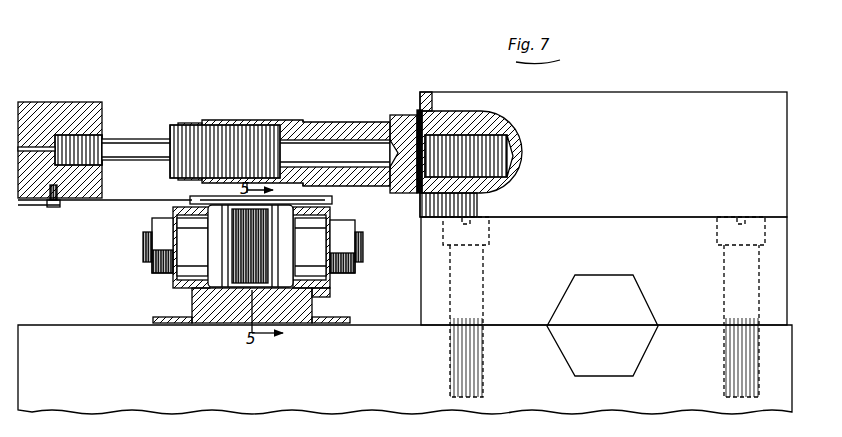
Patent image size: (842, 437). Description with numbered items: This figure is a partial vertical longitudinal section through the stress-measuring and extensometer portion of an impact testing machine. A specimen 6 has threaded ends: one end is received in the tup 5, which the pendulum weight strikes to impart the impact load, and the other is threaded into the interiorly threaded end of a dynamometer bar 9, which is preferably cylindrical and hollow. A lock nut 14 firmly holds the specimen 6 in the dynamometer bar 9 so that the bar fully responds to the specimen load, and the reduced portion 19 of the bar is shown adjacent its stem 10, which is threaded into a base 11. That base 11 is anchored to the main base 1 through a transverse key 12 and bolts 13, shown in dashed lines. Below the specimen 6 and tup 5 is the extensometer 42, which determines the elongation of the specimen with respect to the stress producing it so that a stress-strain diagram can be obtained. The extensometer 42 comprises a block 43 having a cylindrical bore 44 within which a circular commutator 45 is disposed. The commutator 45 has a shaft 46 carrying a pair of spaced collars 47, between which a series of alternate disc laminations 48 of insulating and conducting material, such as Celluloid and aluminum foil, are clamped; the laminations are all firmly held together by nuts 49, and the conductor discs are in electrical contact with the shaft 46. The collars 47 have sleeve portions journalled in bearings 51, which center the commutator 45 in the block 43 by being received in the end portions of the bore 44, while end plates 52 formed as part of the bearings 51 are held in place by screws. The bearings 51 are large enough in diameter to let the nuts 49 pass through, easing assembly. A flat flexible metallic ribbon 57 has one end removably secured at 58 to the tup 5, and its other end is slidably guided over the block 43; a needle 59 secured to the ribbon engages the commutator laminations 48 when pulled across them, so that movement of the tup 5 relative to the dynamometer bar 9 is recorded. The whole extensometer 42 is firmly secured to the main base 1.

The base 1 is at (370, 337).
The tup 5 is at (53, 113).
The specimen 6 is at (143, 140).
The dynamometer bar 9 is at (250, 123).
The stem 10 is at (457, 137).
The base 11 is at (603, 108).
The transverse key 12 is at (605, 287).
The bolts 13 is at (472, 302).
The lock nut 14 is at (183, 122).
The reduced portion of sleeve 19 is at (365, 118).
The extensometer 42 is at (244, 270).
The block 43 is at (198, 317).
The cylindrical bore 44 is at (283, 288).
The circular commutator 45 is at (217, 323).
The shaft 46 is at (148, 237).
The collars 47 is at (187, 233).
The disc laminations 48 is at (268, 260).
The nuts 49 is at (162, 253).
The bearings 51 is at (193, 196).
The end plates 52 is at (177, 213).
The plate 57 is at (142, 186).
The securing point 58 is at (58, 205).
The needle 59 is at (292, 196).